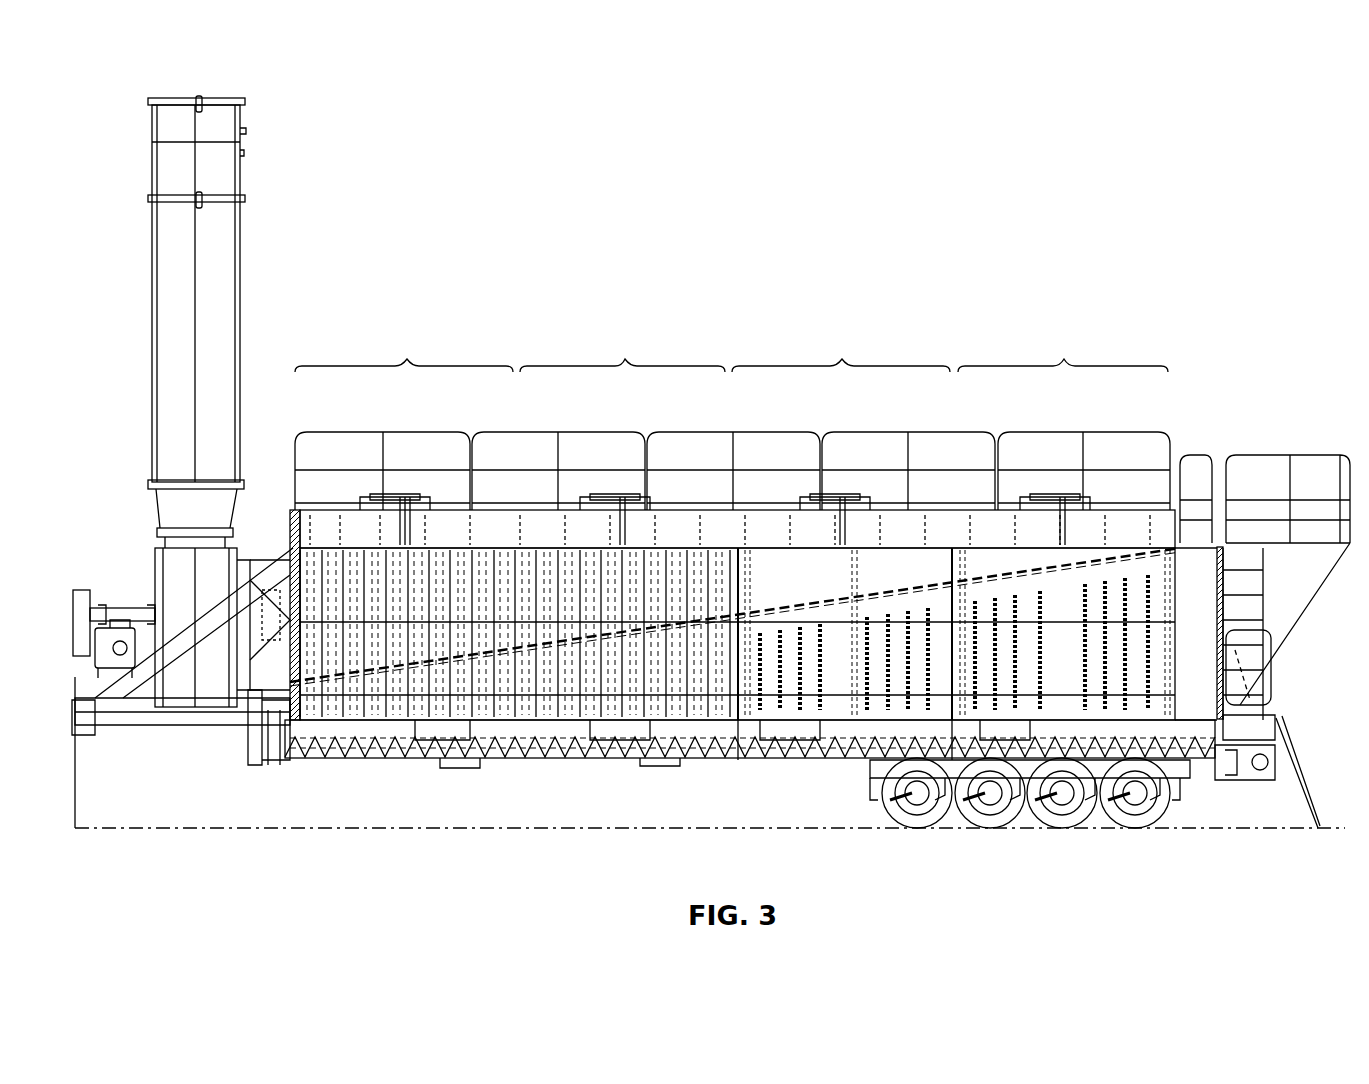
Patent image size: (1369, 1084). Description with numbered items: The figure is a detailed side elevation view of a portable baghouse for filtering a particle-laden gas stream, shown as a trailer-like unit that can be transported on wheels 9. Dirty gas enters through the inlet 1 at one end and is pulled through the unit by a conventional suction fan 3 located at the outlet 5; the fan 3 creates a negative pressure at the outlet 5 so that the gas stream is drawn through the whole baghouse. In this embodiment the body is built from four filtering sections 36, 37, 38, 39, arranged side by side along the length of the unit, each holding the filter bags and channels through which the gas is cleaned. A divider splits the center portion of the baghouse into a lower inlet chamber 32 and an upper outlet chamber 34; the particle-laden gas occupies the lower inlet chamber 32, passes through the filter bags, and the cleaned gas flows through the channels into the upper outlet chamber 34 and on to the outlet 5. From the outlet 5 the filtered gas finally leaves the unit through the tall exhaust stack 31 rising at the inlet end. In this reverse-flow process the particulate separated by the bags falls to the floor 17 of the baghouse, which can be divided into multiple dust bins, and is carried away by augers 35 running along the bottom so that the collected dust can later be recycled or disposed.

The inlet 1 is at (1192, 600).
The suction fan 3 is at (157, 578).
The outlet 5 is at (248, 580).
The wheels 9 is at (1065, 828).
The floor 17 is at (375, 760).
The exhaust stack 31 is at (238, 270).
The lower inlet chamber 32 is at (840, 678).
The upper outlet chamber 34 is at (767, 567).
The augers 35 is at (520, 762).
The filtering section 36 is at (404, 350).
The filtering section 37 is at (622, 350).
The filtering section 38 is at (841, 350).
The filtering section 39 is at (828, 572).